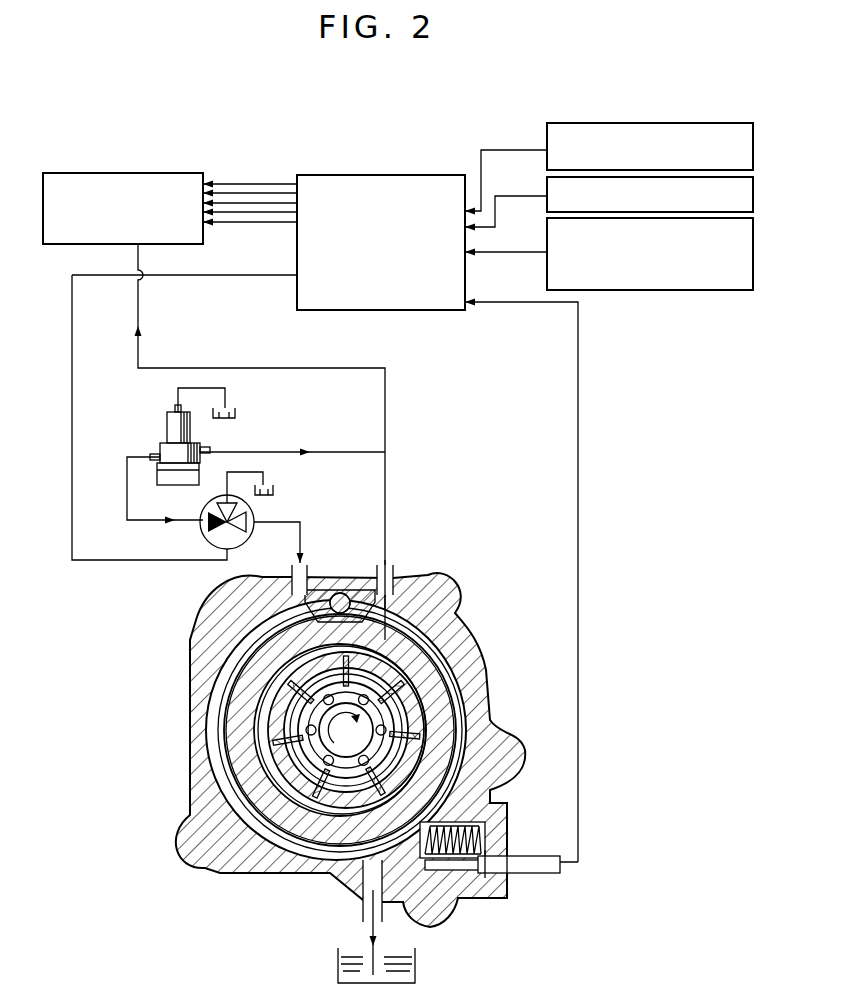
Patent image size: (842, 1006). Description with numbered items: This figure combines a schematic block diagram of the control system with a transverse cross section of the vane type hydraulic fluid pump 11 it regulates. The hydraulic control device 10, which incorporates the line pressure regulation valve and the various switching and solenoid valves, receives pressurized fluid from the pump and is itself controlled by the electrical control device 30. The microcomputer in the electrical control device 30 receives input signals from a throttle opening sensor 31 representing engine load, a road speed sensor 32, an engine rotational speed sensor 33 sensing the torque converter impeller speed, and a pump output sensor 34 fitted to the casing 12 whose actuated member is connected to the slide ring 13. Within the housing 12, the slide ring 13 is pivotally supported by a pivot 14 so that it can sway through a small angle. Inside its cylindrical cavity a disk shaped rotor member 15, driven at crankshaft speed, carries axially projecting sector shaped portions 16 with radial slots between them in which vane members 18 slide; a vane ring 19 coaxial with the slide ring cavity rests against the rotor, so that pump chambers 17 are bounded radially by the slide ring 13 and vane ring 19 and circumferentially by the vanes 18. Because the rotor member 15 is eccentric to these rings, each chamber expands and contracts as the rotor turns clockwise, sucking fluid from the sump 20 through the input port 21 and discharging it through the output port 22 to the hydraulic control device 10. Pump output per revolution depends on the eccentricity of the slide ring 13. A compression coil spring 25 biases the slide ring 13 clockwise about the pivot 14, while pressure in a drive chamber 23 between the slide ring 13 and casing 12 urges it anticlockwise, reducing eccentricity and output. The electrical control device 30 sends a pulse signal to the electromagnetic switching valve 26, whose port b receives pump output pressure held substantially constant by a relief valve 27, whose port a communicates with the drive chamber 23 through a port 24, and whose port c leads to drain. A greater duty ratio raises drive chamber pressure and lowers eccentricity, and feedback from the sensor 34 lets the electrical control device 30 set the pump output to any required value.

The hydraulic control device 10 is at (203, 174).
The hydraulic fluid pump 11 is at (461, 611).
The housing 12 is at (478, 681).
The slide ring 13 is at (443, 715).
The pivot 14 is at (344, 594).
The rotor member 15 is at (373, 742).
The sector shaped portions 16 is at (410, 688).
The pump chambers 17 is at (255, 733).
The vane members 18 is at (285, 637).
The vane ring 19 is at (300, 800).
The sump 20 is at (418, 970).
The input port 21 is at (352, 890).
The output port 22 is at (410, 582).
The drive chamber 23 is at (228, 680).
The port 24 is at (330, 586).
The compression coil spring 25 is at (485, 832).
The electromagnetic switching valve 26 is at (205, 536).
The relief valve 27 is at (165, 436).
The electrical control device 30 is at (452, 312).
The throttle opening sensor 31 is at (540, 138).
The road speed sensor 32 is at (540, 188).
The engine rotational speed sensor 33 is at (540, 233).
The pump output sensor 34 is at (532, 874).